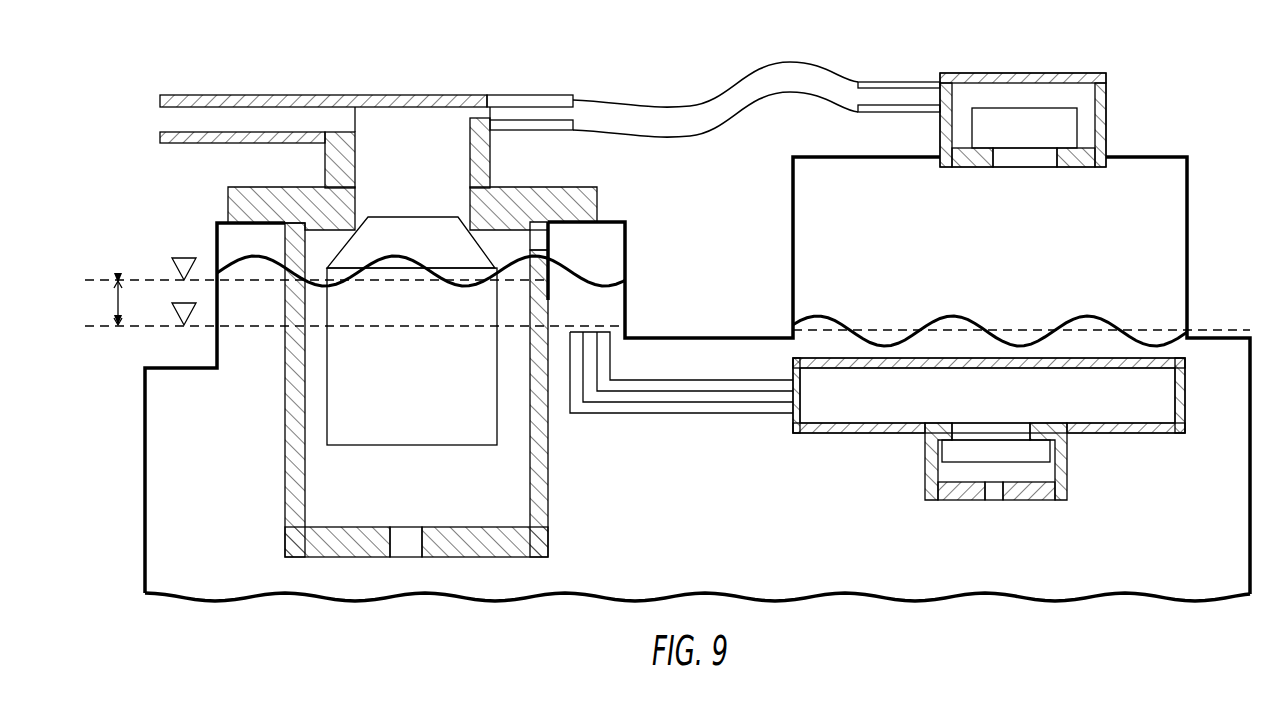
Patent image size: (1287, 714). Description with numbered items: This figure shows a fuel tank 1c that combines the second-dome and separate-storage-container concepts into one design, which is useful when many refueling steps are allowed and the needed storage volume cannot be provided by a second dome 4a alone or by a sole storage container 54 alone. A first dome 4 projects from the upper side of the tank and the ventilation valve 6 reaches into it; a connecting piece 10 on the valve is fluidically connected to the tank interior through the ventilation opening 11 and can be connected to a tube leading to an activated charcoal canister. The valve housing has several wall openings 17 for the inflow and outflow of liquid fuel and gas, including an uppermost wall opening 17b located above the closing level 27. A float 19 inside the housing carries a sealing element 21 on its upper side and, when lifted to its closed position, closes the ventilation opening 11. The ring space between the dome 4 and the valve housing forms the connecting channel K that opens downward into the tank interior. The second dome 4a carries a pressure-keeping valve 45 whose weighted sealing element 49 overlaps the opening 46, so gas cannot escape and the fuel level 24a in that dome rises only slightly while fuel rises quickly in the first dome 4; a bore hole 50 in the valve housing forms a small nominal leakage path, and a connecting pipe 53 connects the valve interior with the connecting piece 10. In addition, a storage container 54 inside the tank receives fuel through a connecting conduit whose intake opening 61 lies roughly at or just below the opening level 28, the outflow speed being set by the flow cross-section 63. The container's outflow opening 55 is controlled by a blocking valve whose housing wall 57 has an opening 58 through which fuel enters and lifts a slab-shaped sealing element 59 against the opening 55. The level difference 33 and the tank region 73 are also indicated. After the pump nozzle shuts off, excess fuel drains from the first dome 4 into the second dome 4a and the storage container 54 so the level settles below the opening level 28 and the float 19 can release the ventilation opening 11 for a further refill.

The fuel tank 1c is at (1183, 104).
The dome 4 is at (605, 245).
The second dome 4a is at (1170, 200).
The ventilation valve 6 is at (293, 500).
The connecting piece 10 is at (277, 95).
The ventilation opening 11 is at (420, 196).
The wall openings 17 is at (405, 545).
The uppermost wall opening 17b is at (539, 242).
The float 19 is at (383, 427).
The sealing element 21 is at (387, 243).
The fuel level 24a is at (1145, 262).
The closing level 27 is at (137, 280).
The opening level 28 is at (107, 326).
The level difference 33 is at (118, 302).
The pressure-keeping valve 45 is at (1015, 73).
The opening 46 is at (1033, 155).
The weighted sealing element 49 is at (1048, 120).
The bore hole 50 is at (655, 410).
The connecting pipe 53 is at (790, 62).
The storage container 54 is at (1155, 355).
The outflow opening 55 is at (993, 432).
The housing wall 57 is at (937, 495).
The opening 58 is at (990, 493).
The slab-shaped sealing element 59 is at (1025, 452).
The intake opening 61 is at (590, 325).
The flow cross-section 63 is at (678, 398).
The base 73 is at (187, 562).
The connecting channel K is at (243, 247).